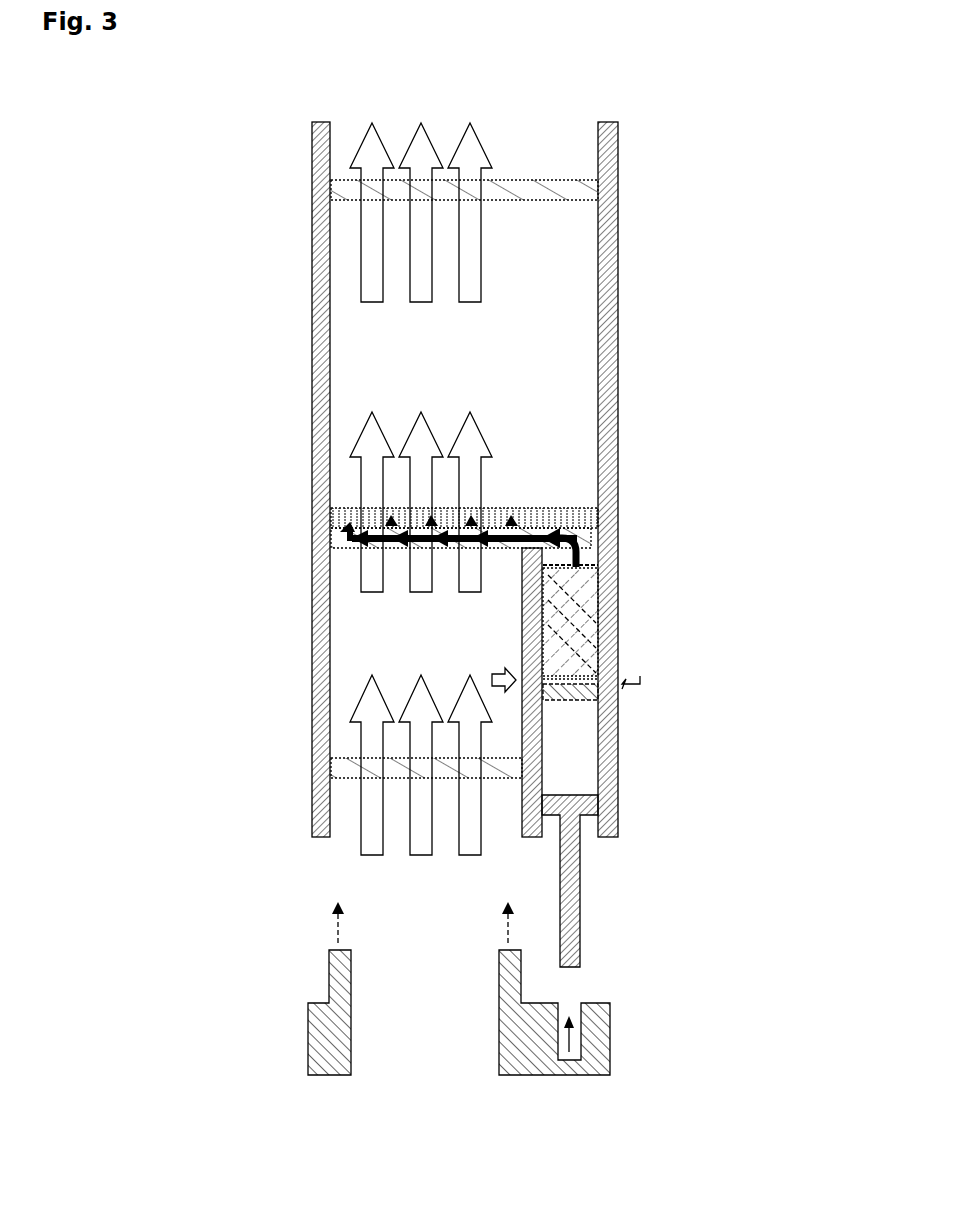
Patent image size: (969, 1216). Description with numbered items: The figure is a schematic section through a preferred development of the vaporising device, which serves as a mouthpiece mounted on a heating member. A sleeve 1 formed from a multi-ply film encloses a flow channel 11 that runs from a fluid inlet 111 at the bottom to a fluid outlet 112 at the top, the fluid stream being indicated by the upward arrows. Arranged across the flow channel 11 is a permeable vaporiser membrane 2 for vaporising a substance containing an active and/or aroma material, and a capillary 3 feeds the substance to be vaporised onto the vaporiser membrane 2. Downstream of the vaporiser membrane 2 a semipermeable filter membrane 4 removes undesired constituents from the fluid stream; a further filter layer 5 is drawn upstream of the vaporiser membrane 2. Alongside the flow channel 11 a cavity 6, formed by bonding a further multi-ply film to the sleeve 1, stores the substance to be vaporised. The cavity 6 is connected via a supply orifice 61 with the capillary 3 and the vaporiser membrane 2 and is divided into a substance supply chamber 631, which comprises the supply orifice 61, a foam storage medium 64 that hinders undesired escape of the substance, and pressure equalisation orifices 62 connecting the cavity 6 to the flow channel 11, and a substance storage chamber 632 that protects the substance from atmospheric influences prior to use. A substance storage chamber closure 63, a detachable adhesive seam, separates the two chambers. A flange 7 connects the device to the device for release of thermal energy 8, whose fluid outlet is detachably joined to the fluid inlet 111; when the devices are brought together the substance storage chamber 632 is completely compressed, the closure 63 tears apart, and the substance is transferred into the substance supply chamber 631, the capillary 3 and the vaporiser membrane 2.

The sleeve 1 is at (322, 163).
The flow channel 11 is at (381, 350).
The fluid outlet 112 is at (420, 100).
The fluid inlet 111 is at (418, 868).
The vaporiser membrane 2 is at (350, 515).
The capillary 3 is at (342, 540).
The filter membrane 4 is at (537, 188).
The lower filter 5 is at (349, 768).
The cavity 6 is at (555, 755).
The supply orifice 61 is at (586, 553).
The substance supply chamber 631 is at (573, 583).
The substance storage chamber 632 is at (577, 765).
The substance storage chamber closure 63 is at (565, 693).
The storage medium 64 is at (575, 630).
The pressure equalisation orifices 62 is at (527, 679).
The flange 7 is at (570, 957).
The device for release of thermal energy 8 is at (510, 1003).